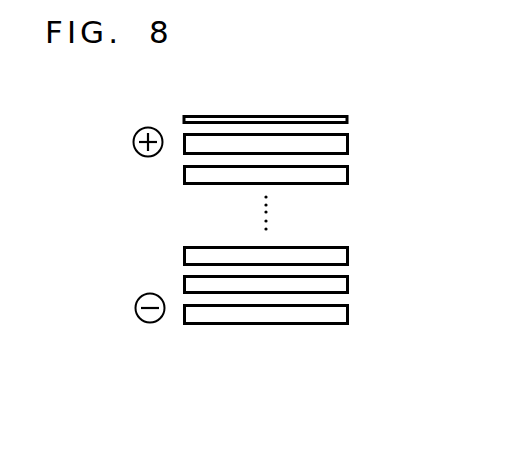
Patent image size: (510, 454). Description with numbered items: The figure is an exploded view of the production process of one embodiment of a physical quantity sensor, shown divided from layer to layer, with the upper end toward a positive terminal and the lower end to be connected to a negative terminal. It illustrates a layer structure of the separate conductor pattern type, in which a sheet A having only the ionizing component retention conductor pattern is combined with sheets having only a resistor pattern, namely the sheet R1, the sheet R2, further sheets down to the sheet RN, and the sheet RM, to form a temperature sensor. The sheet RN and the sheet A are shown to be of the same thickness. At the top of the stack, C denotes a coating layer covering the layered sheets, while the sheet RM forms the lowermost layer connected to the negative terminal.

The coating layer C is at (348, 119).
The sheet having only resistor pattern R1 is at (349, 142).
The sheet having only resistor pattern R2 is at (349, 170).
The sheet having only resistor pattern RN is at (349, 255).
The sheet having only the ionizing component retention conductor pattern A is at (349, 282).
The sheet having only resistor pattern RM is at (349, 312).